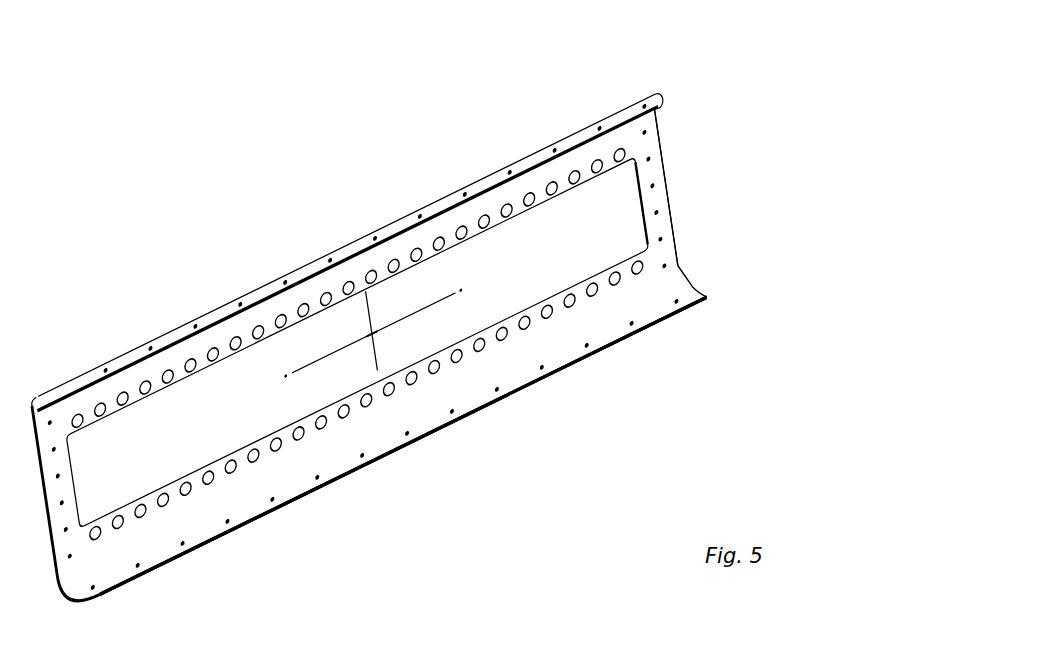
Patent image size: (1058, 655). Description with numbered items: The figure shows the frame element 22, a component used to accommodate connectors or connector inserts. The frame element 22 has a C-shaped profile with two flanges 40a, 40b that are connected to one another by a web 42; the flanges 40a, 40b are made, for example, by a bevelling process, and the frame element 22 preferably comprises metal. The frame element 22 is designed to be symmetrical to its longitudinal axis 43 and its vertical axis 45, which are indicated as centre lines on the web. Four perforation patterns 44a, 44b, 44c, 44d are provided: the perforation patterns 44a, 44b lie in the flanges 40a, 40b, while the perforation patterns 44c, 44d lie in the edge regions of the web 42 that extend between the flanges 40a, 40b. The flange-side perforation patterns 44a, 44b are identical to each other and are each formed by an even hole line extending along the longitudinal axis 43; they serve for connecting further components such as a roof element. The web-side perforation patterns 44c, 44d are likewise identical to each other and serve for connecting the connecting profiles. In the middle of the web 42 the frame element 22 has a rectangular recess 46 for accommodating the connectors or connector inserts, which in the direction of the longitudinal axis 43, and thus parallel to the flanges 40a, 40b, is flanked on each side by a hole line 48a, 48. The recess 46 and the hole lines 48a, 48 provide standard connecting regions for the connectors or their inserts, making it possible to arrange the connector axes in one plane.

The frame element 22 is at (62, 60).
The flange 40a is at (657, 100).
The flange 40b is at (692, 282).
The web 42 is at (369, 349).
The longitudinal axis 43 is at (371, 331).
The perforation pattern 44a is at (347, 254).
The perforation pattern 44b is at (398, 441).
The perforation pattern 44c is at (66, 500).
The perforation pattern 44d is at (659, 190).
The vertical axis 45 is at (373, 333).
The rectangular recess 46 is at (357, 342).
The holes 48 is at (366, 400).
The hole line 48a is at (348, 288).